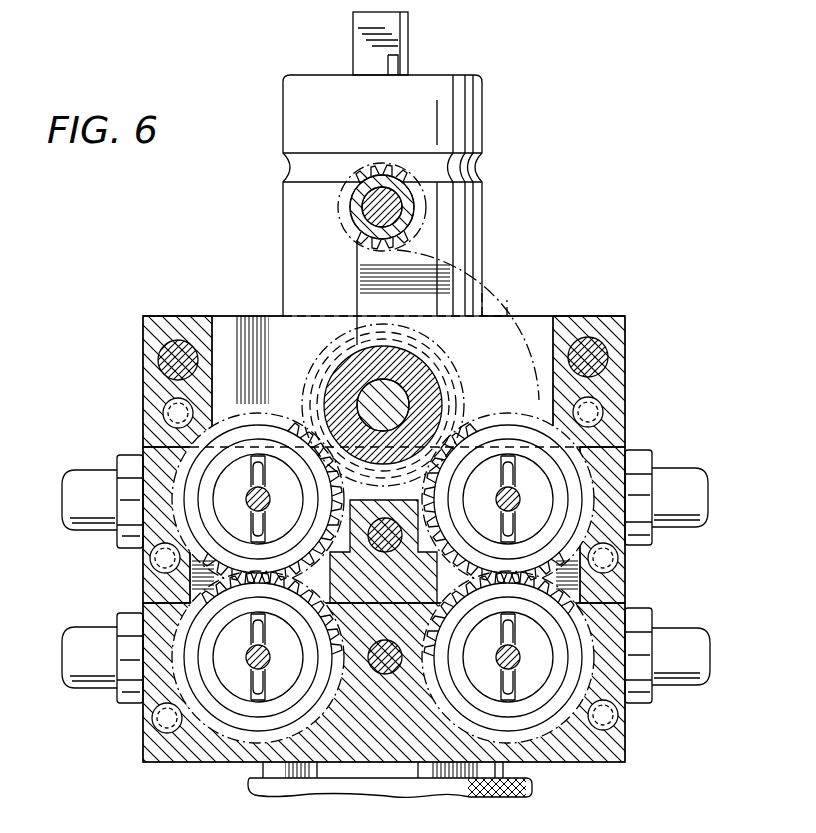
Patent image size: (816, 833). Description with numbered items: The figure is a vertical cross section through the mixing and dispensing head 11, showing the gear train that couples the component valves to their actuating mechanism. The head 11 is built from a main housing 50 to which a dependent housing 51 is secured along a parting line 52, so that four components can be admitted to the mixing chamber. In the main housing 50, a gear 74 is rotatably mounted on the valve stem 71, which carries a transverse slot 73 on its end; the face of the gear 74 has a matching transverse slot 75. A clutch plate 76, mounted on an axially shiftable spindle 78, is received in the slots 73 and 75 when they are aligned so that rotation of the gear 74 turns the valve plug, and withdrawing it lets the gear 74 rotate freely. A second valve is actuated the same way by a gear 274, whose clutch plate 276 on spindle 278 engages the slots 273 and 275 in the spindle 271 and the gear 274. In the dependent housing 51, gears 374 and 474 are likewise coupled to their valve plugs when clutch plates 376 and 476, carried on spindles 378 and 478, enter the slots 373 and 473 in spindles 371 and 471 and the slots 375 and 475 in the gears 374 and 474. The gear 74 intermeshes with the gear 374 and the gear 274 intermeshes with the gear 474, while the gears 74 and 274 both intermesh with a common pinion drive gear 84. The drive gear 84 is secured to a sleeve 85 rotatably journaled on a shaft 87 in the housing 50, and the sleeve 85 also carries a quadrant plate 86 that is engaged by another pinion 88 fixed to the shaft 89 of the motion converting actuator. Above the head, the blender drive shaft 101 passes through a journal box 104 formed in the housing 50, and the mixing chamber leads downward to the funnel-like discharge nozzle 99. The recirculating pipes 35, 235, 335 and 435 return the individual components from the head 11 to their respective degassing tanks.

The mixing and dispensing head 11 is at (158, 313).
The recirculating pipe 35 is at (80, 478).
The main housing 50 is at (618, 572).
The dependent housing 51 is at (618, 746).
The parting line 52 is at (618, 598).
The stem 71 is at (240, 488).
The transverse slot 73 is at (272, 507).
The gear 74 is at (237, 436).
The transverse slot 75 is at (259, 462).
The clutch plate 76 is at (266, 537).
The spindle 78 is at (248, 500).
The drive gear 84 is at (333, 363).
The sleeve 85 is at (413, 366).
The quadrant plate 86 is at (487, 297).
The shaft 87 is at (400, 400).
The pinion 88 is at (415, 210).
The shaft 89 is at (365, 207).
The discharge nozzle 99 is at (393, 787).
The drive shaft 101 is at (395, 30).
The journal box 104 is at (290, 95).
The recirculating pipe 235 is at (680, 470).
The spindle 271 is at (526, 500).
The slot 273 is at (501, 464).
The gear 274 is at (568, 466).
The slot 275 is at (502, 456).
The clutch plate 276 is at (513, 530).
The spindle 278 is at (498, 501).
The recirculating pipe 335 is at (75, 650).
The spindle 371 is at (243, 656).
The slot 373 is at (265, 626).
The gear 374 is at (223, 717).
The slot 375 is at (259, 692).
The clutch plate 376 is at (268, 678).
The spindle 378 is at (270, 656).
The recirculating pipe 435 is at (698, 634).
The spindle 471 is at (497, 672).
The slot 473 is at (517, 633).
The gear 474 is at (540, 730).
The slot 475 is at (512, 696).
The clutch plate 476 is at (520, 681).
The spindle 478 is at (500, 650).